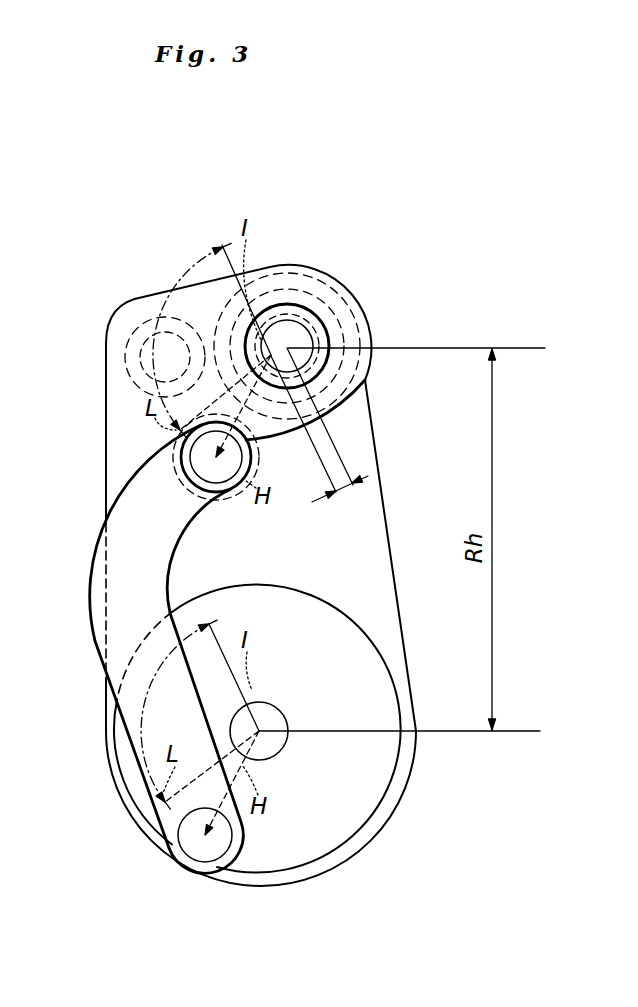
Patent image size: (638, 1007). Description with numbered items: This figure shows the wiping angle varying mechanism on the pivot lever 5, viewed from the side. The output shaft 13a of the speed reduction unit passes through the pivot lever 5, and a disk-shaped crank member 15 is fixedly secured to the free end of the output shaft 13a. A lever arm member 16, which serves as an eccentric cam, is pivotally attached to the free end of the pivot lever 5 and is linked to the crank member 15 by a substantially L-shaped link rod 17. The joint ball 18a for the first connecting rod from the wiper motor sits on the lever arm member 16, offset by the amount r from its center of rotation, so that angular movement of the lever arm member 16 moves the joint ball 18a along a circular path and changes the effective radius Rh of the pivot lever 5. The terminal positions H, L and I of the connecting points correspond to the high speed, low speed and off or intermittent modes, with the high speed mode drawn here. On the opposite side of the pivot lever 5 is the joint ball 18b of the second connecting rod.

The pivot lever 5 is at (106, 430).
The output shaft 13a is at (273, 718).
The crank member 15 is at (113, 746).
The lever arm member 16 is at (290, 432).
The link rod 17 is at (94, 584).
The joint ball 18a is at (323, 326).
The joint ball 18b is at (131, 333).